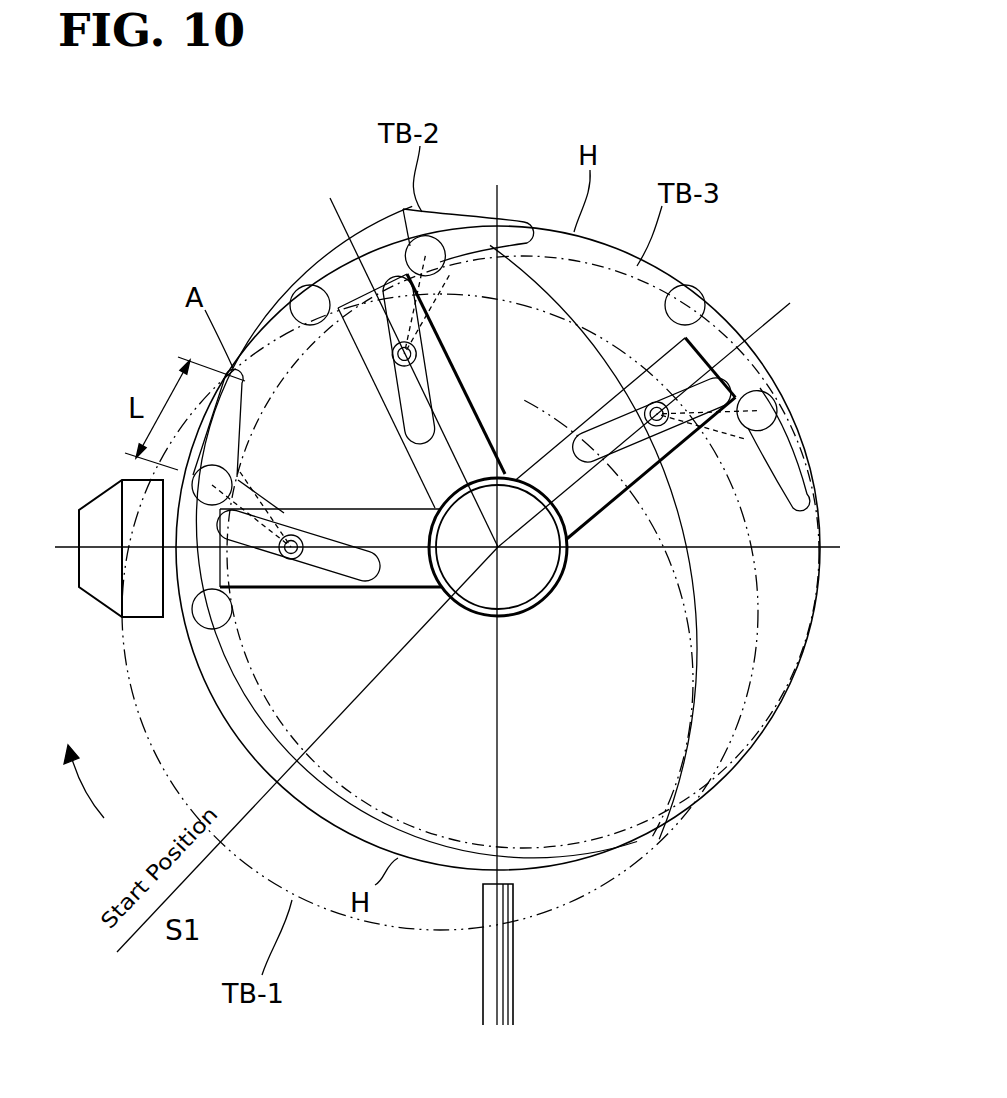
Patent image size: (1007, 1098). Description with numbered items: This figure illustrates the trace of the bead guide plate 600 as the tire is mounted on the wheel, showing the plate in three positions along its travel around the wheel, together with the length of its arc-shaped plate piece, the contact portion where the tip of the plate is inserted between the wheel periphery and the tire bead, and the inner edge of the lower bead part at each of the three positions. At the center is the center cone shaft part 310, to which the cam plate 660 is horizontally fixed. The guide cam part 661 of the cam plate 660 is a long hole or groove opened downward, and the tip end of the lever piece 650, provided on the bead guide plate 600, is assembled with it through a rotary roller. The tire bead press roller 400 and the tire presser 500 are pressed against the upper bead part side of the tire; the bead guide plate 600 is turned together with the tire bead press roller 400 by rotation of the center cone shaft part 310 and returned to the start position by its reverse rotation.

The center cone shaft part 310 is at (522, 592).
The tire bead press roller 400 is at (95, 600).
The tire presser 500 is at (518, 982).
The bead guide plate 600 is at (242, 402).
The lever piece 650 is at (258, 505).
The cam plate 660 is at (371, 588).
The guide cam part 661 is at (320, 570).